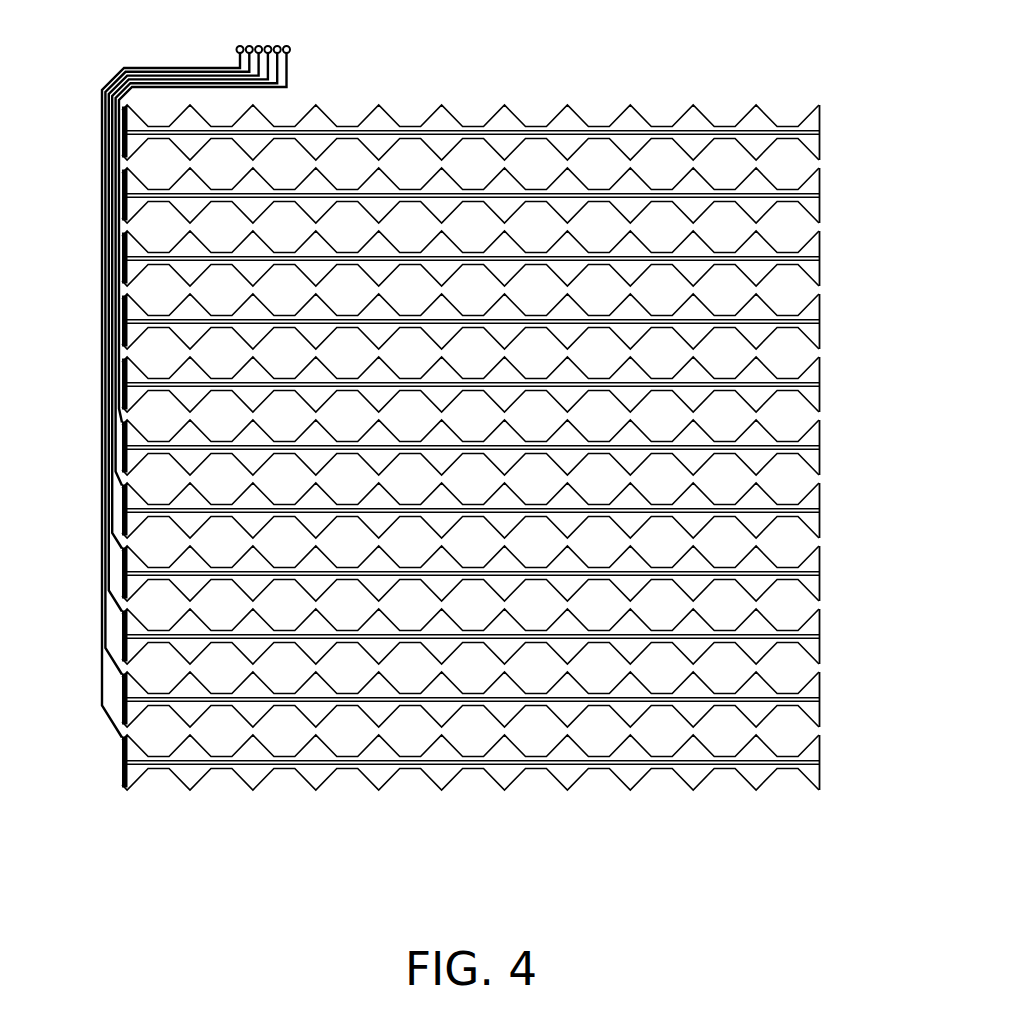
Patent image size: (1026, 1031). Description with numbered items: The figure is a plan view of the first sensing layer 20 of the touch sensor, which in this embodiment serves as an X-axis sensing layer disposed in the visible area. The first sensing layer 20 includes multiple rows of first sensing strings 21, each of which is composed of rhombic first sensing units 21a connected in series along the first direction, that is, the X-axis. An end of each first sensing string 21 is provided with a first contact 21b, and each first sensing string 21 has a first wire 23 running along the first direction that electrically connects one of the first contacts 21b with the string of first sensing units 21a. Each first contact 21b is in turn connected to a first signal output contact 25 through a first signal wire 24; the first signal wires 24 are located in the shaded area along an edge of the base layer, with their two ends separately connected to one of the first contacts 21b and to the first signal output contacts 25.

The first sensing layer 20 is at (470, 83).
The first sensing string 21 is at (830, 682).
The first sensing unit 21a is at (317, 770).
The first contact 21b is at (122, 756).
The first wire 23 is at (182, 763).
The first signal wire 24 is at (102, 673).
The first signal output contact 25 is at (236, 48).